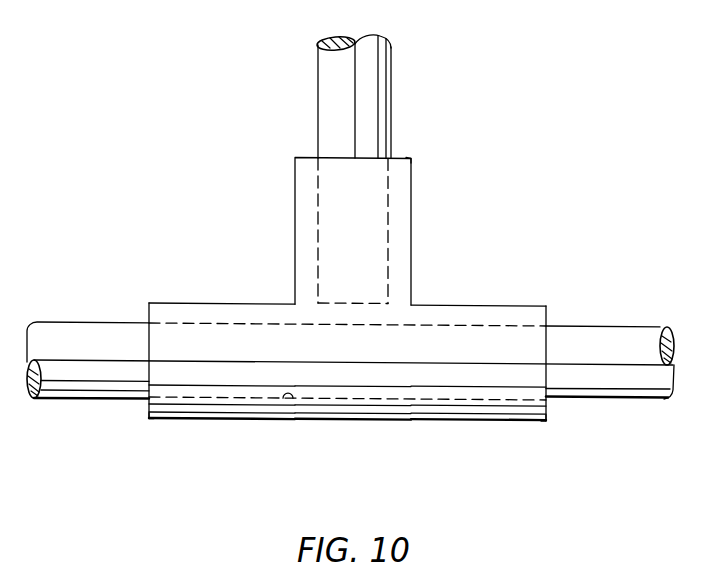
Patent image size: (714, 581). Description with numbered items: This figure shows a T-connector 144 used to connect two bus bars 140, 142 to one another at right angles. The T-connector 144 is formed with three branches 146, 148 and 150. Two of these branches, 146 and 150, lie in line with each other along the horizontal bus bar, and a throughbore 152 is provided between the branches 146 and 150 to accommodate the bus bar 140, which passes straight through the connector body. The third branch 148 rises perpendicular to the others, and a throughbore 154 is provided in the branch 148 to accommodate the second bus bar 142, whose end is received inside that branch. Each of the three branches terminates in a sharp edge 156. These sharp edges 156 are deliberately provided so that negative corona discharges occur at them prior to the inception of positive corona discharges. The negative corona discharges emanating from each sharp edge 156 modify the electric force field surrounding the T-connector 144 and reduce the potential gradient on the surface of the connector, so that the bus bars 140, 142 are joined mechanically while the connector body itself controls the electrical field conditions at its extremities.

The bus bar 140 is at (97, 383).
The bus bar 142 is at (328, 82).
The T-connector 144 is at (424, 433).
The branch 146 is at (191, 305).
The branch 148 is at (303, 178).
The branch 150 is at (512, 311).
The throughbore 152 is at (285, 403).
The throughbore 154 is at (386, 211).
The sharp edge 156 is at (411, 158).